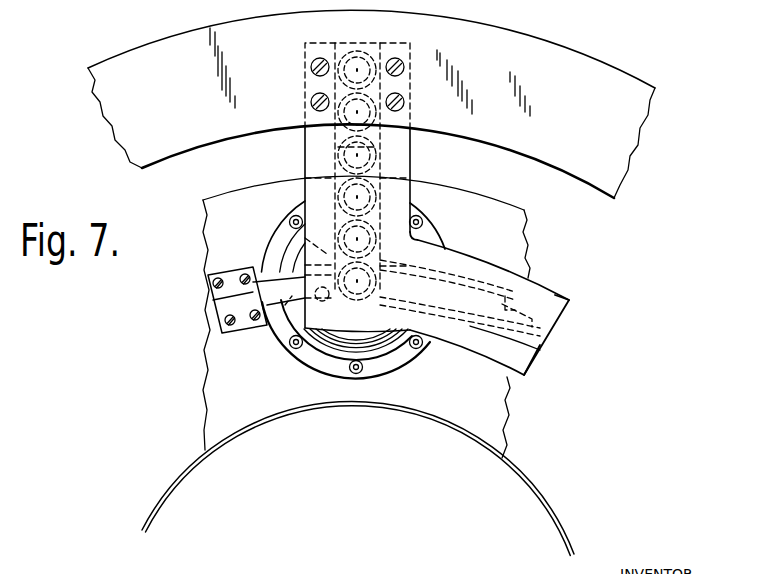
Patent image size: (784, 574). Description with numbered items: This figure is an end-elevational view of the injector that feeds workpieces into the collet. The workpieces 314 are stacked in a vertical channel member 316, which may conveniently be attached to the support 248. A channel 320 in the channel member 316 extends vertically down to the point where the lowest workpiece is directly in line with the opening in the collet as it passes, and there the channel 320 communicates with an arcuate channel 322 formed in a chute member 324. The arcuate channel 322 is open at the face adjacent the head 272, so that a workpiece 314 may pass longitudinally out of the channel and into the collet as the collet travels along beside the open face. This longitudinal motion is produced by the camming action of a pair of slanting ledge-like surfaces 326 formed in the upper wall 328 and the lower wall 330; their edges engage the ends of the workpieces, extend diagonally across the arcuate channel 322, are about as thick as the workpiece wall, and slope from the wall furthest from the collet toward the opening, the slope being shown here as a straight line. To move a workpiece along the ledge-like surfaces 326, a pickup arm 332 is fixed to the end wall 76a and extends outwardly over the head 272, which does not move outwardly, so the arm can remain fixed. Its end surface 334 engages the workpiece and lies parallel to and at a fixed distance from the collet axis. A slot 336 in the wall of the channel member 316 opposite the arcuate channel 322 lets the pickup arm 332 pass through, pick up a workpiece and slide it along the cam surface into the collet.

The support 248 is at (572, 58).
The end wall 76a is at (514, 225).
The head 272 is at (302, 372).
The end surface 334 is at (287, 224).
The channel member 316 is at (308, 168).
The channel 320 is at (340, 148).
The workpiece 314 is at (378, 155).
The arcuate channel 322 is at (560, 287).
The upper wall 328 is at (569, 300).
The slanting ledge-like surfaces 326 is at (549, 335).
The chute member 324 is at (549, 354).
The lower wall 330 is at (524, 377).
The pickup arm 332 is at (218, 304).
The slot 336 is at (285, 305).